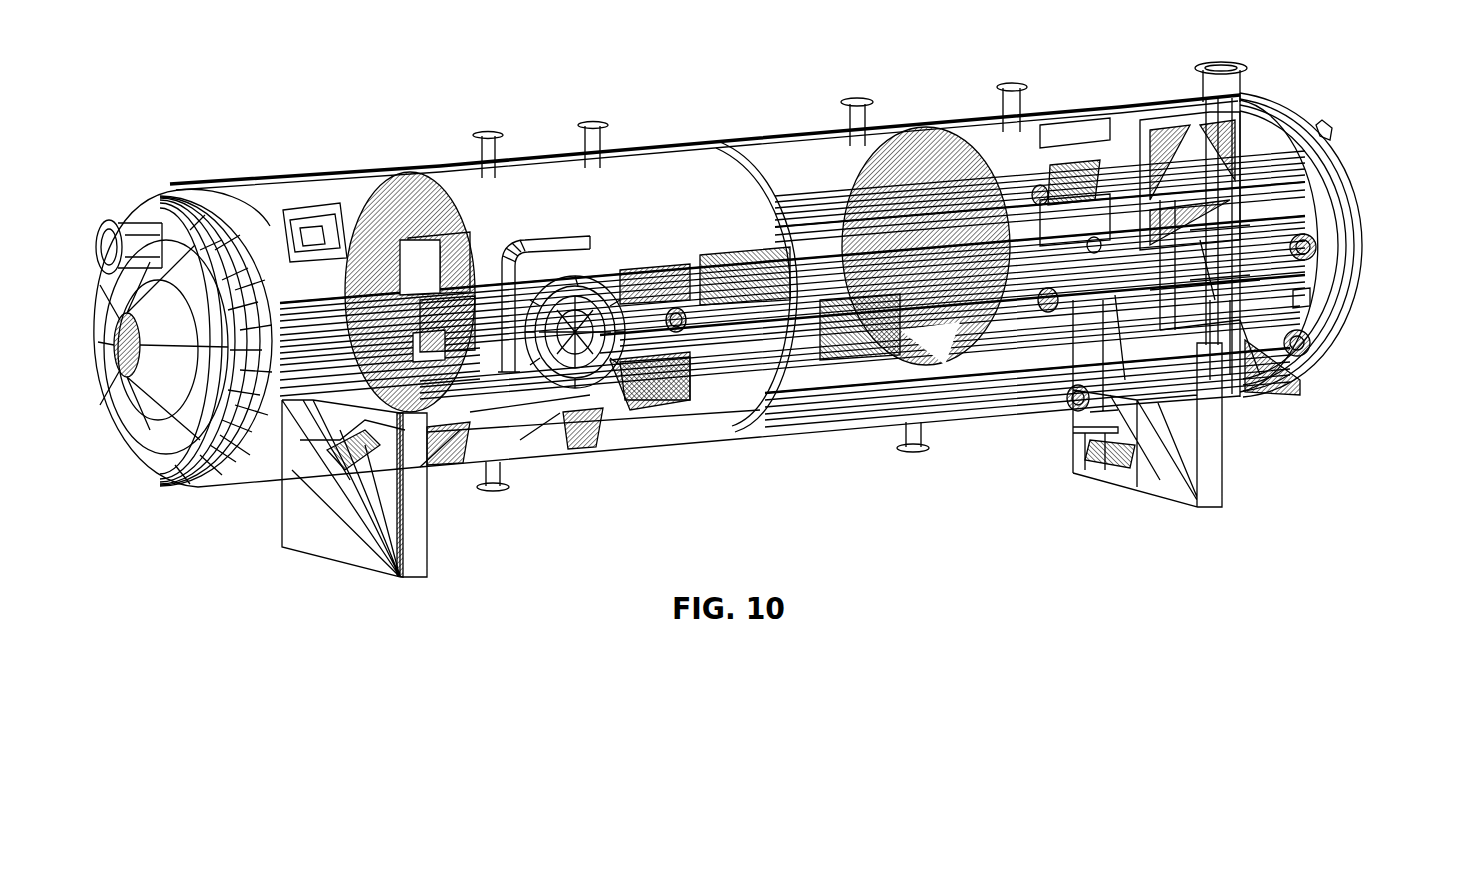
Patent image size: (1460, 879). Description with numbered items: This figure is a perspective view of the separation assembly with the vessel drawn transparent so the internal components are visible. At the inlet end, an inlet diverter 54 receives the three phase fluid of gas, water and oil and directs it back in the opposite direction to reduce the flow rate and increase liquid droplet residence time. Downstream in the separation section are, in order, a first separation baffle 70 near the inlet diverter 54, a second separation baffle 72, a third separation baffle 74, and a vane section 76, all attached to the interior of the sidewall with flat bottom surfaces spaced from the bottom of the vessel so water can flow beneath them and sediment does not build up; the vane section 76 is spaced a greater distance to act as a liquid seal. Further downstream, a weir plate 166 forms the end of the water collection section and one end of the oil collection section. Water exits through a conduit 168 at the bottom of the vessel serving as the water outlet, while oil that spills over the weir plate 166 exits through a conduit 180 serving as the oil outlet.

The inlet diverter 54 is at (728, 319).
The first separation baffle 70 is at (447, 199).
The second separation baffle 72 is at (652, 290).
The third separation baffle 74 is at (797, 256).
The vane section 76 is at (980, 145).
The weir plate 166 is at (1190, 310).
The conduit 168 is at (1097, 416).
The conduit 180 is at (1226, 419).